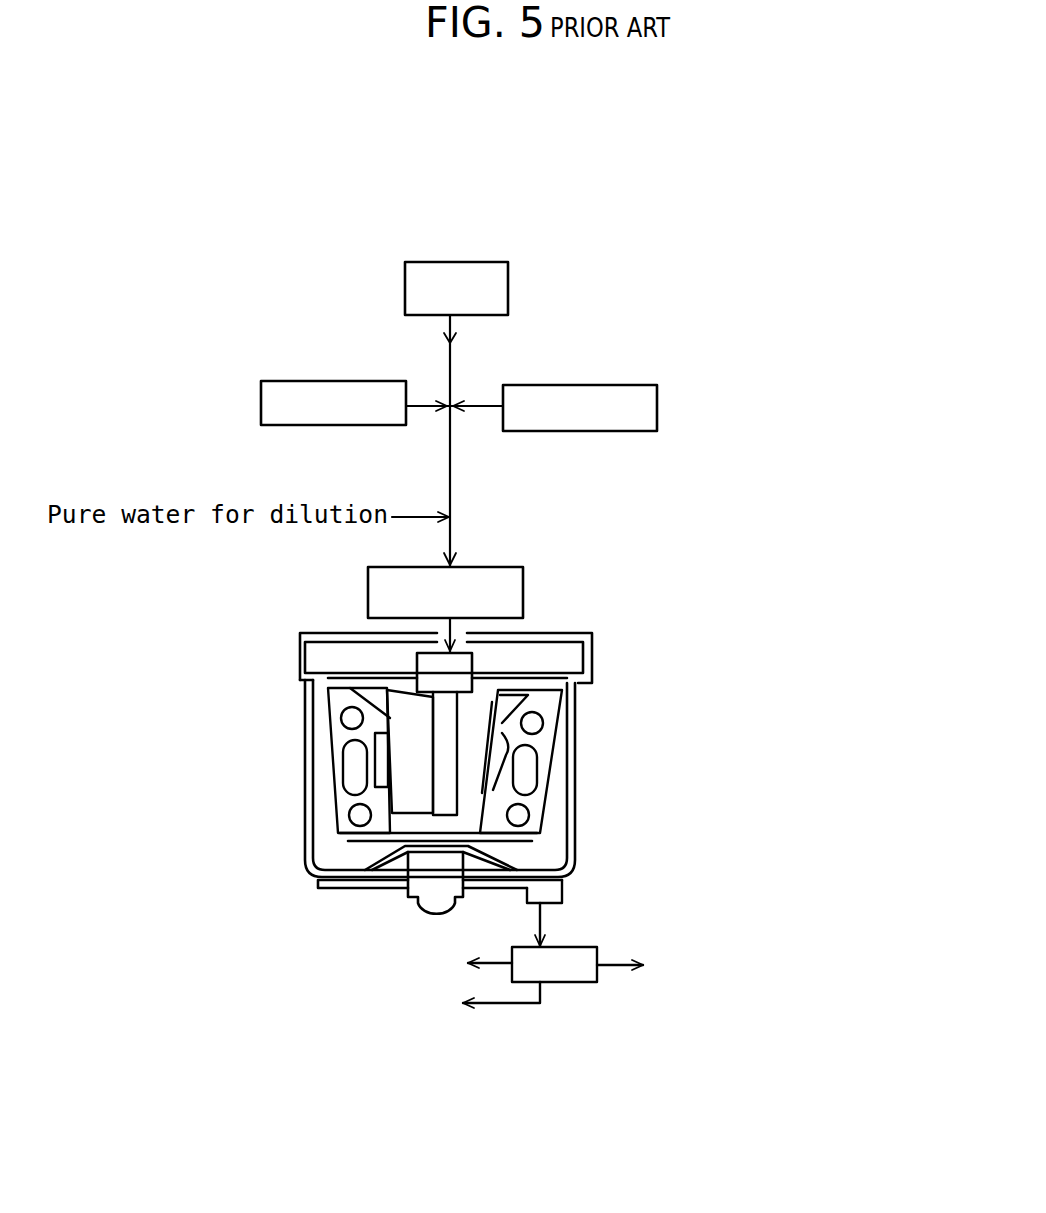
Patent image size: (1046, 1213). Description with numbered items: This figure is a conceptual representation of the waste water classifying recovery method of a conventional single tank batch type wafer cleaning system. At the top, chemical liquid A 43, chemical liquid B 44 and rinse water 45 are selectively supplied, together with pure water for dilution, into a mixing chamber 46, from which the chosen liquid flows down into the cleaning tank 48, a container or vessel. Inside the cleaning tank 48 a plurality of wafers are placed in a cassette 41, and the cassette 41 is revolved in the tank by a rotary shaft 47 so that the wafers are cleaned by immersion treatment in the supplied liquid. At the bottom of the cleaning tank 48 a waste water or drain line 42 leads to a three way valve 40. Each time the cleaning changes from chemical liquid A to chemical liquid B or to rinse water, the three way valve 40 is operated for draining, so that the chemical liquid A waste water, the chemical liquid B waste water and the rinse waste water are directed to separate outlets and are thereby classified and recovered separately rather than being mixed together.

The three way valve 40 is at (580, 949).
The cassette 41 is at (510, 702).
The waste water line 42 is at (545, 915).
The chemical liquid A 43 is at (303, 380).
The chemical liquid B 44 is at (600, 387).
The rinse water 45 is at (509, 300).
The mixing chamber 46 is at (497, 565).
The rotary shaft 47 is at (457, 762).
The cleaning tank 48 is at (305, 818).